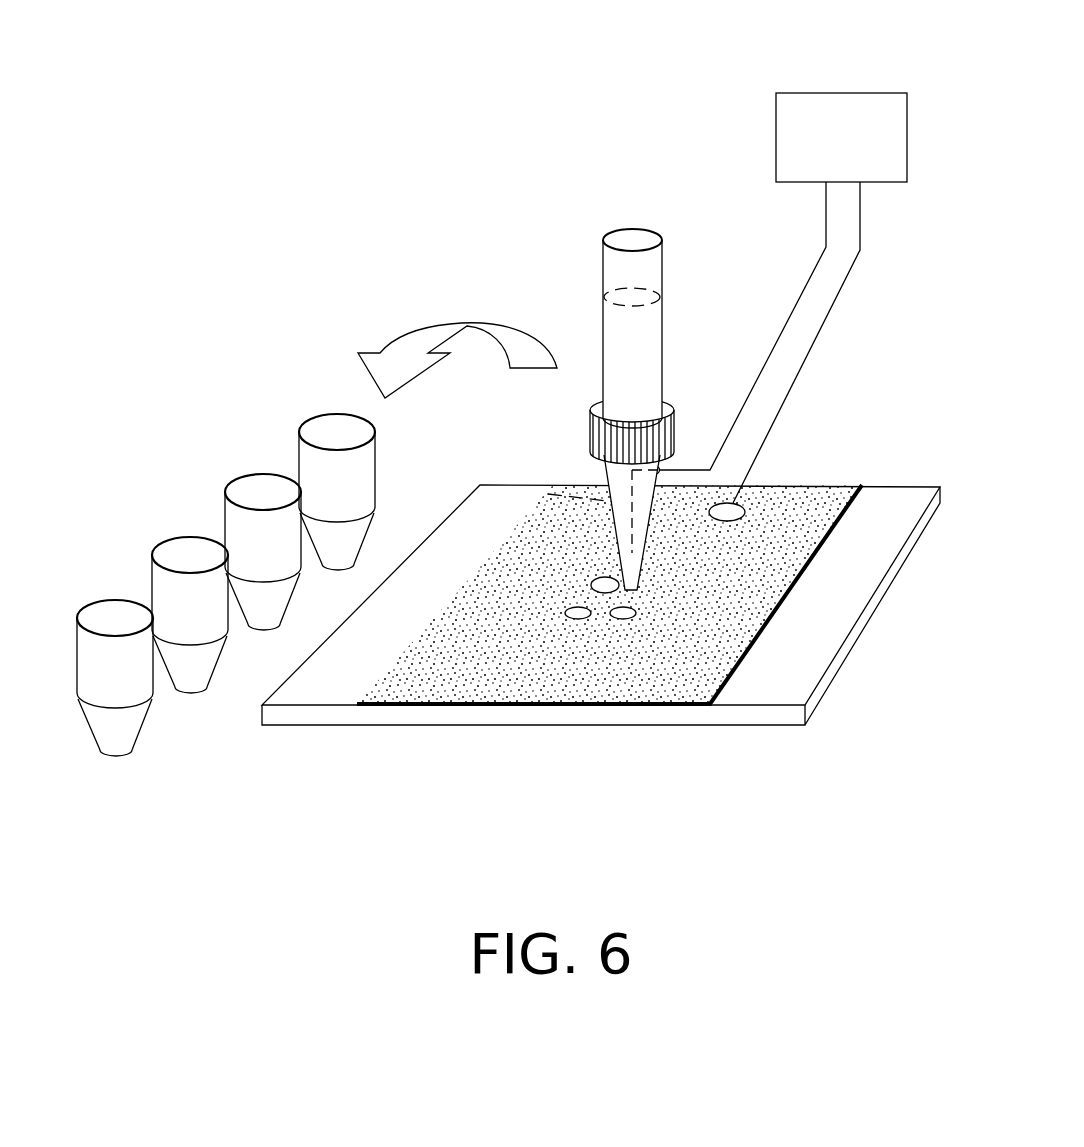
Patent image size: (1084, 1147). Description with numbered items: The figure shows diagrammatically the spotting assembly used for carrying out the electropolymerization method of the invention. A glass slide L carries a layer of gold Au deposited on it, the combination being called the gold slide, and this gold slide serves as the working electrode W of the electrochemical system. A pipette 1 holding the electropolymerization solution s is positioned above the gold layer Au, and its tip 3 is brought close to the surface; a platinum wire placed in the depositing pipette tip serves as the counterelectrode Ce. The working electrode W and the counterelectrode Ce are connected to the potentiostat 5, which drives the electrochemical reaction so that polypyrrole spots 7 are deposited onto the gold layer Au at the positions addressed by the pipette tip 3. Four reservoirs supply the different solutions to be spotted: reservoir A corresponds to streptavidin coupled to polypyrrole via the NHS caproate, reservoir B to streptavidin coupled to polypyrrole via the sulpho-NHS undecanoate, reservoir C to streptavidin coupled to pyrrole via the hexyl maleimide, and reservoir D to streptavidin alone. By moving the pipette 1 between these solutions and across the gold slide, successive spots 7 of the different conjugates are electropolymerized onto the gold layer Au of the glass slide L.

The pipette 1 is at (612, 275).
The tip of the pipette 3 is at (616, 562).
The potentiostat 5 is at (815, 113).
The polypyrrole spots 7 is at (578, 619).
The electropolymerization solution s is at (603, 322).
The counterelectrode Ce is at (773, 343).
The working electrode W is at (847, 278).
The layer of gold Au is at (833, 497).
The glass slide L is at (782, 717).
The streptavidin coupled to polypyrrole via NHS caproate A is at (115, 678).
The streptavidin coupled to polypyrrole via sulpho-NHS undecanoate B is at (190, 615).
The streptavidin coupled to pyrrole via hexyl maleimide C is at (263, 552).
The streptavidin alone D is at (337, 492).